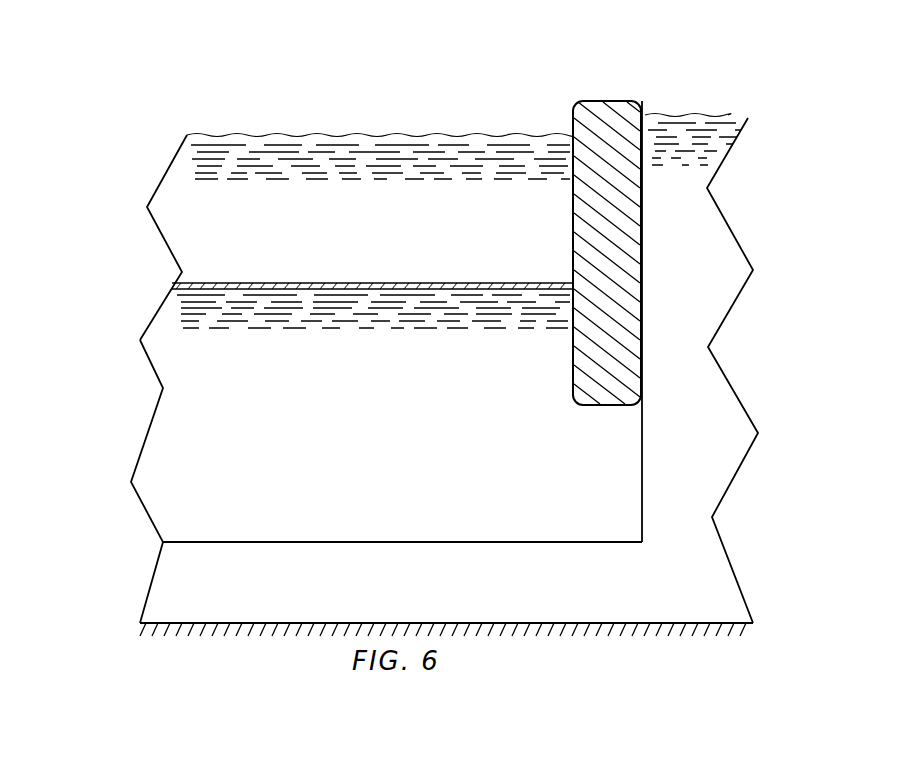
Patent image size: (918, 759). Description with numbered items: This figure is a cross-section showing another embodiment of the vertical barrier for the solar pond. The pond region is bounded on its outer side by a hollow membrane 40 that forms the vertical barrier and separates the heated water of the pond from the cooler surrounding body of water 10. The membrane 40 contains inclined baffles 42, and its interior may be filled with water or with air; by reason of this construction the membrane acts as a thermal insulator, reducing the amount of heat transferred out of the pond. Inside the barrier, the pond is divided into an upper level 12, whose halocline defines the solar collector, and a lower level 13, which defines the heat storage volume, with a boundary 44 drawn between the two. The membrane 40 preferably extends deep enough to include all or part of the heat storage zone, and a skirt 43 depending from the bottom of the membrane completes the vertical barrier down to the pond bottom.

The body of water 10 is at (698, 173).
The upper level 12 is at (200, 241).
The lower level 13 is at (190, 502).
The hollow membrane 40 is at (599, 98).
The inclined baffles 42 is at (620, 150).
The skirt 43 is at (643, 455).
The interface layer 44 is at (257, 283).